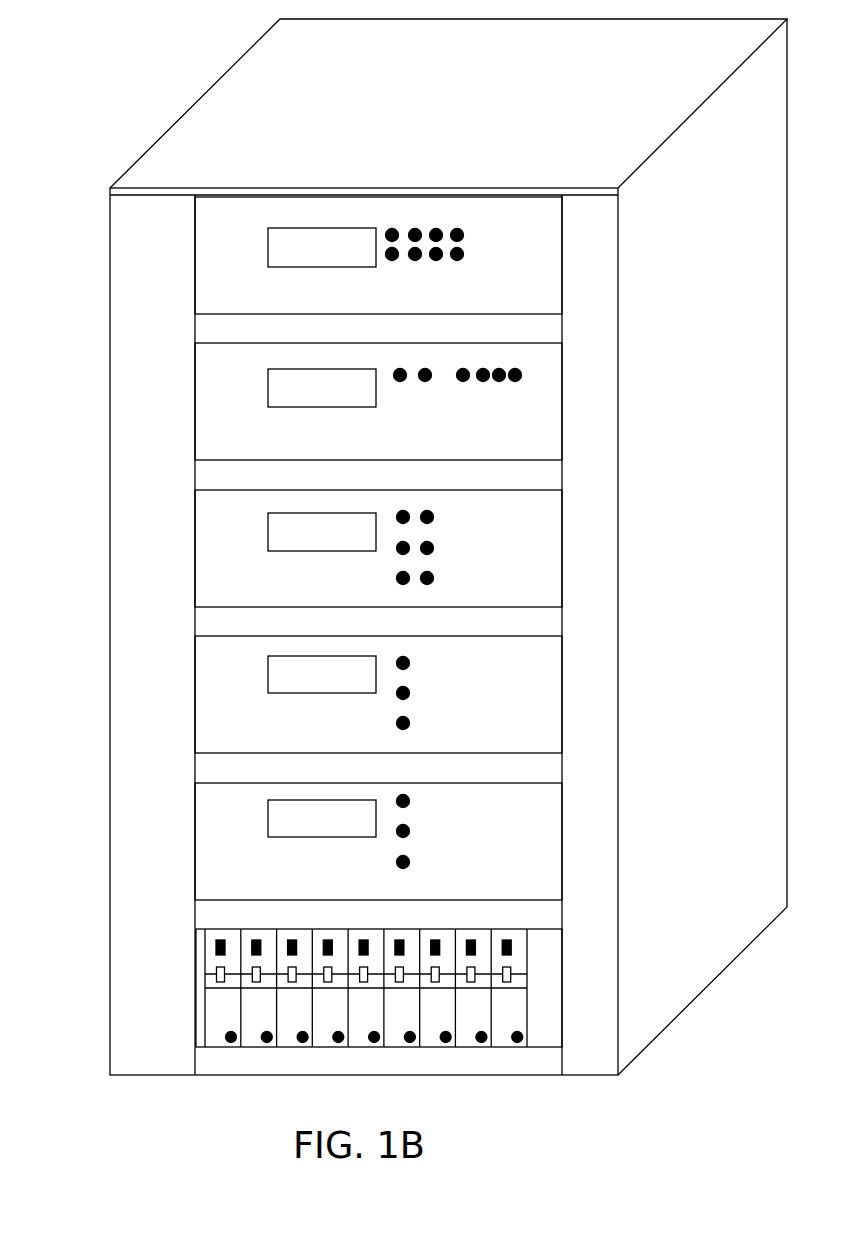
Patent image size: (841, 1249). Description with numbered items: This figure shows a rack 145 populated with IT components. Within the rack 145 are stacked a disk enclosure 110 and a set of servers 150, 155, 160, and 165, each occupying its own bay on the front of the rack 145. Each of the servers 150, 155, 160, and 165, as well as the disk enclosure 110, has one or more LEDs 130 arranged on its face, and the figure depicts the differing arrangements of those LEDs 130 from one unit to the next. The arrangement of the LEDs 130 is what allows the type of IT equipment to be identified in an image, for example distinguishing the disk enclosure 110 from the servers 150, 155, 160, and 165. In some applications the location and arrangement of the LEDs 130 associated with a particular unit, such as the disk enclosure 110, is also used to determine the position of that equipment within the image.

The rack 145 is at (240, 150).
The server 150 is at (303, 226).
The server 155 is at (220, 406).
The server 160 is at (217, 572).
The server 165 is at (217, 692).
The LEDs 130 is at (399, 233).
The disk enclosure 110 is at (205, 989).